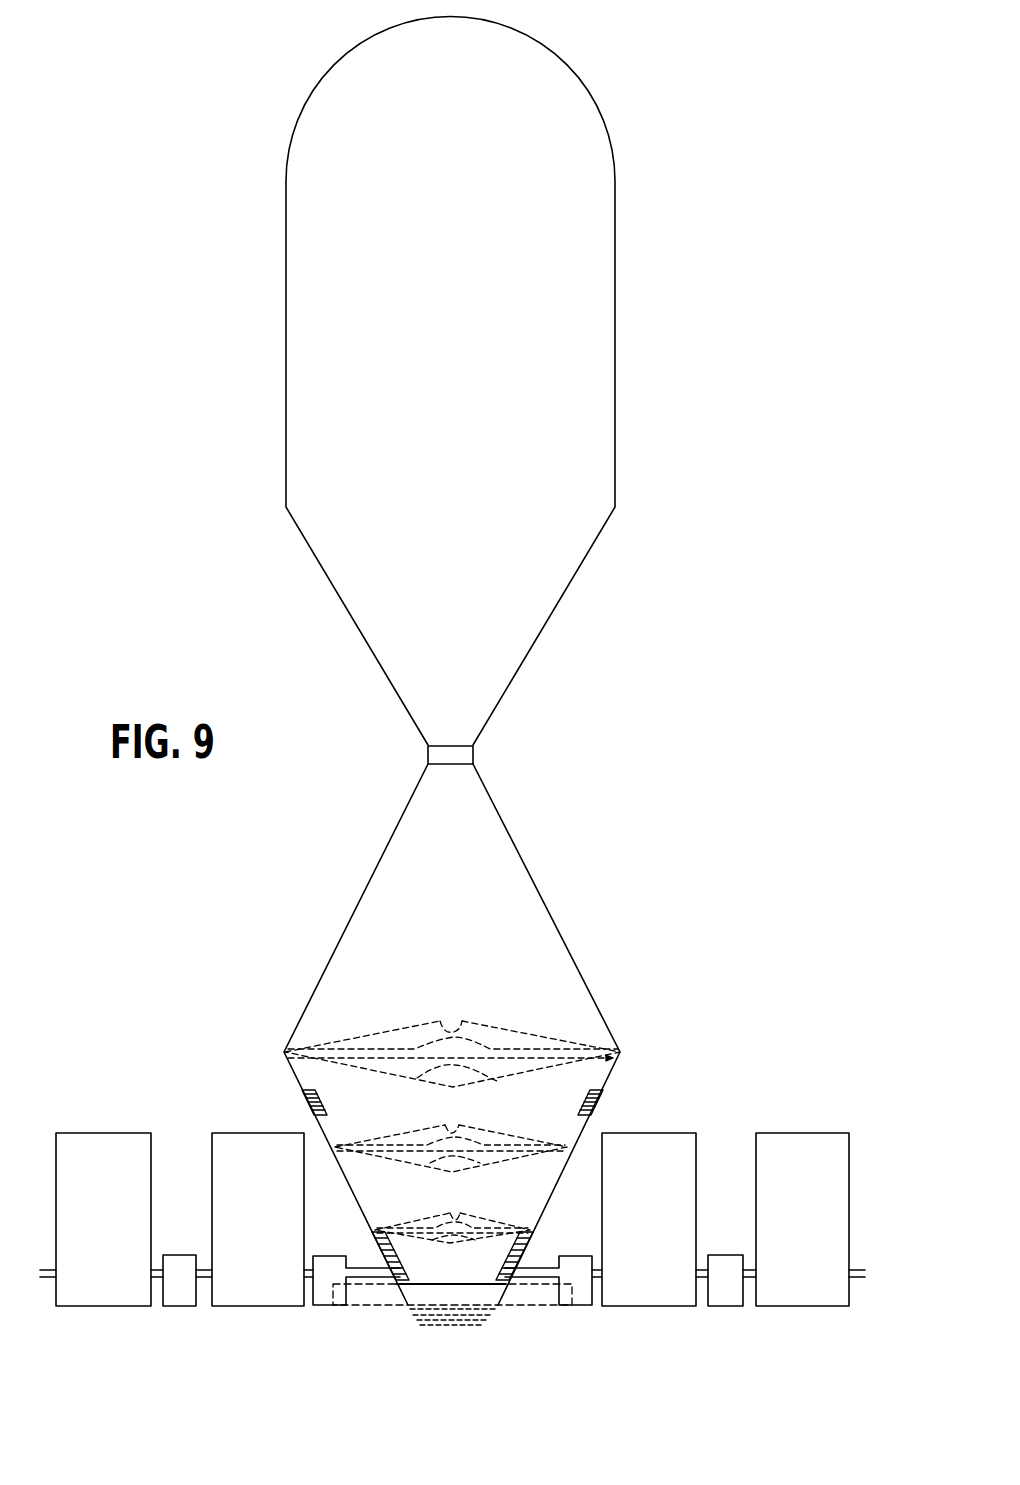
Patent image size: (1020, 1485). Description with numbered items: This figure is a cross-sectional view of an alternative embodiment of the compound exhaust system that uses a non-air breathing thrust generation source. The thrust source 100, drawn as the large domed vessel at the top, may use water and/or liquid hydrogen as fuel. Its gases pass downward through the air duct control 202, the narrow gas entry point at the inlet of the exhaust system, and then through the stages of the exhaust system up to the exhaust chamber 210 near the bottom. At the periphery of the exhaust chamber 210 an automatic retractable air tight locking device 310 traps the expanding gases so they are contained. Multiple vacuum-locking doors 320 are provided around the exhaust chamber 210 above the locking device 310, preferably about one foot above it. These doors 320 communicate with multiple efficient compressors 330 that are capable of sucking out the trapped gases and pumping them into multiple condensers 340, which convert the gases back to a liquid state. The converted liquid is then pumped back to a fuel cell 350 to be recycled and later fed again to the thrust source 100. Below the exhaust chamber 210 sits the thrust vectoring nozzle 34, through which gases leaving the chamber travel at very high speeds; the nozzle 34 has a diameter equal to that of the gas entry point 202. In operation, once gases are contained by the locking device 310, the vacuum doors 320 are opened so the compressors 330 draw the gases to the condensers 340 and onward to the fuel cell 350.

The thrust source 100 is at (615, 245).
The air duct control 202 is at (475, 756).
The exhaust chamber 210 is at (430, 1262).
The automatic retractable air tight locking device 310 is at (493, 1293).
The vacuum-locking doors 320 is at (503, 1250).
The compressors 330 is at (175, 1255).
The condensers 340 is at (253, 1133).
The fuel cell 350 is at (105, 1133).
The thrust vectoring nozzle 34 is at (457, 1326).